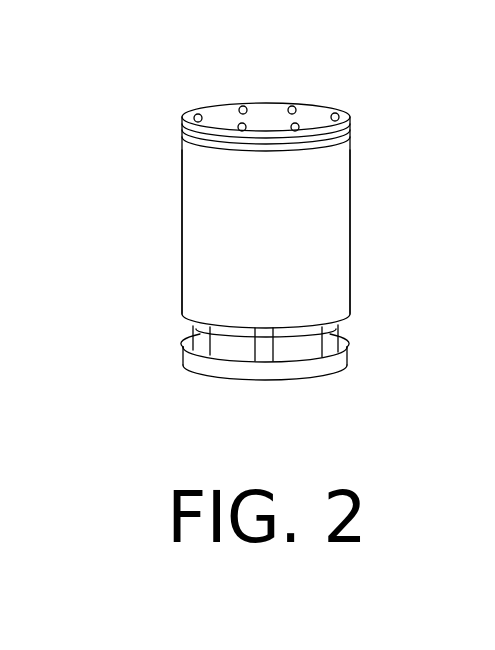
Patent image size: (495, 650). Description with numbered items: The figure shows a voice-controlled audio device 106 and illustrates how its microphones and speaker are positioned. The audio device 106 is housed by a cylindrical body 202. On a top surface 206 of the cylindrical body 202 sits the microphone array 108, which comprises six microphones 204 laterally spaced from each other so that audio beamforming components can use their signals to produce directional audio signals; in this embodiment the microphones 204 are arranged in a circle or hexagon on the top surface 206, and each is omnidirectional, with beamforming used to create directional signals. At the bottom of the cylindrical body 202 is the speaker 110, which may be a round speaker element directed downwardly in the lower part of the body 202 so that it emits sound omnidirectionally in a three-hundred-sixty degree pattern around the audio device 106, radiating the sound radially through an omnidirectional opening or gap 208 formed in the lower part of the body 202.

The audio device 106 is at (362, 201).
The microphone array 108 is at (181, 88).
The speaker 110 is at (221, 350).
The cylindrical body 202 is at (198, 203).
The microphones 204 is at (332, 114).
The top surface 206 is at (331, 109).
The omnidirectional opening or gap 208 is at (298, 348).